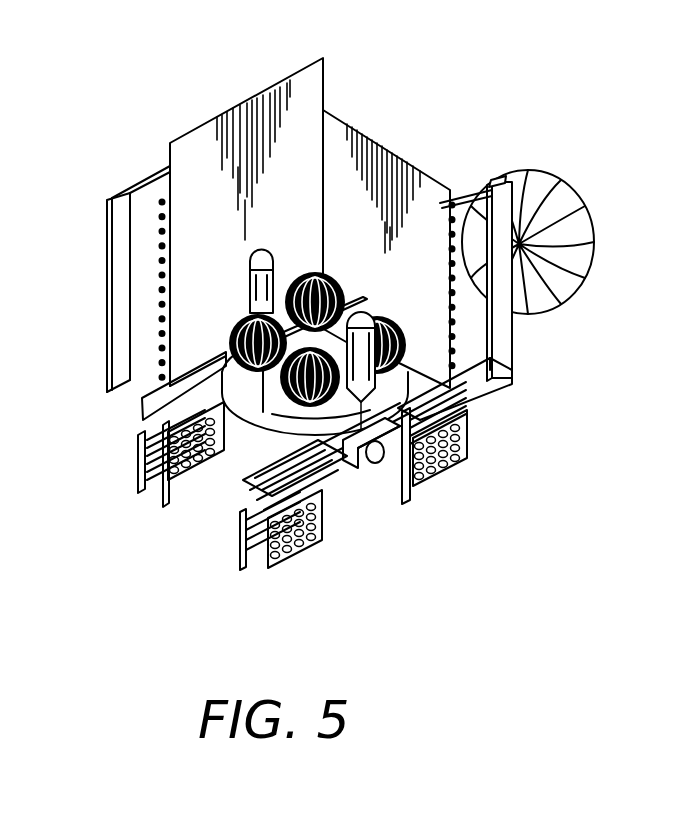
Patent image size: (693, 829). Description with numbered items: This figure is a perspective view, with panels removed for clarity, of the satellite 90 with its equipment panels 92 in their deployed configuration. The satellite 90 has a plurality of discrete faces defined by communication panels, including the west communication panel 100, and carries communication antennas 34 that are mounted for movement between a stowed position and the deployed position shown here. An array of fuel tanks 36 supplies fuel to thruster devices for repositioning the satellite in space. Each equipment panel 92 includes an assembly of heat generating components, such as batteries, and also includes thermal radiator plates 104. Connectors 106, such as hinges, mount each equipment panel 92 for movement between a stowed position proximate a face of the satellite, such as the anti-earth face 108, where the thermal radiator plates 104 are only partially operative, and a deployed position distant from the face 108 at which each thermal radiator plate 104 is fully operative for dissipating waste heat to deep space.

The satellite 90 is at (341, 316).
The west communication panel 100 is at (345, 202).
The communication antennas 34 is at (563, 200).
The fuel tanks 36 is at (303, 277).
The thermal radiator plates 104 is at (165, 380).
The connectors 106 is at (460, 401).
The anti-earth face 108 is at (370, 478).
The equipment panels 92 is at (250, 545).